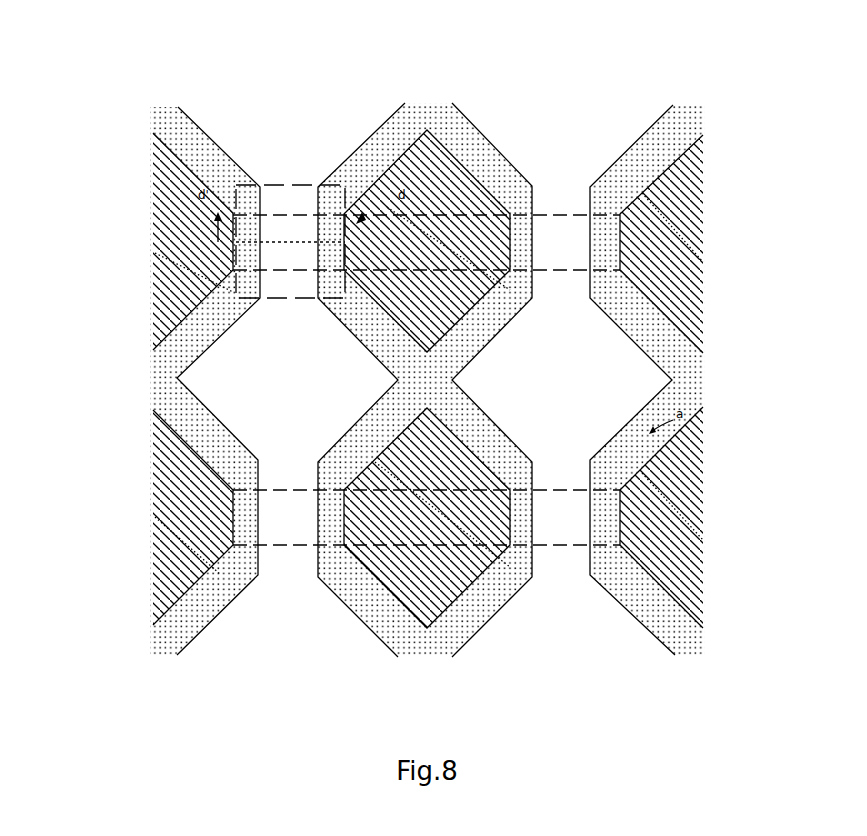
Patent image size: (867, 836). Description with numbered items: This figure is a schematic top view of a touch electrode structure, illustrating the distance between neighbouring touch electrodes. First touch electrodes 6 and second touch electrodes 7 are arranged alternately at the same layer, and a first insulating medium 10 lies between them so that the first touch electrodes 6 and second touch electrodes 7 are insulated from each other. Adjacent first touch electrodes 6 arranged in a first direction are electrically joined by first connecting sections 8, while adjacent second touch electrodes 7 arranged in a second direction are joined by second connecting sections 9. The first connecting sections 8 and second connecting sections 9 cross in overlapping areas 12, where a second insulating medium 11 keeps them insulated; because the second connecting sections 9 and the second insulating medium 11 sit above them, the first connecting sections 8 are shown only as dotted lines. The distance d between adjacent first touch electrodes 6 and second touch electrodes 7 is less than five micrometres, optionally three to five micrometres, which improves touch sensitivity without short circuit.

The first touch electrode 6 is at (431, 150).
The second touch electrode 7 is at (642, 380).
The first connecting section 8 is at (603, 215).
The second connecting section 9 is at (280, 203).
The first insulating medium 10 is at (165, 363).
The second insulating medium 11 is at (610, 543).
The overlapping area 12 is at (345, 198).